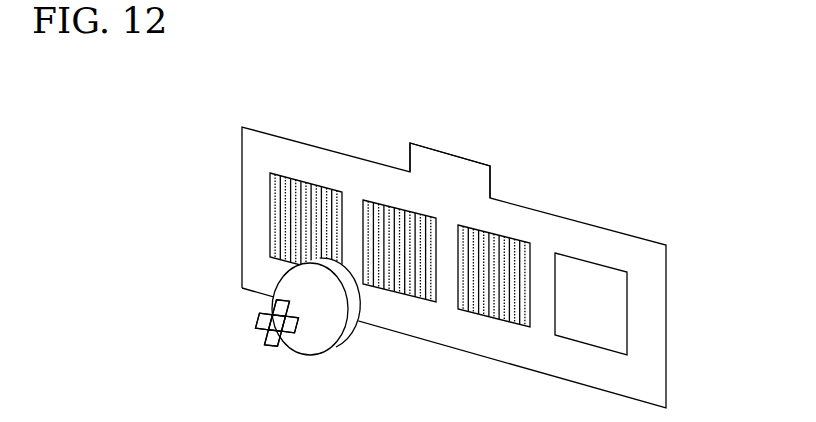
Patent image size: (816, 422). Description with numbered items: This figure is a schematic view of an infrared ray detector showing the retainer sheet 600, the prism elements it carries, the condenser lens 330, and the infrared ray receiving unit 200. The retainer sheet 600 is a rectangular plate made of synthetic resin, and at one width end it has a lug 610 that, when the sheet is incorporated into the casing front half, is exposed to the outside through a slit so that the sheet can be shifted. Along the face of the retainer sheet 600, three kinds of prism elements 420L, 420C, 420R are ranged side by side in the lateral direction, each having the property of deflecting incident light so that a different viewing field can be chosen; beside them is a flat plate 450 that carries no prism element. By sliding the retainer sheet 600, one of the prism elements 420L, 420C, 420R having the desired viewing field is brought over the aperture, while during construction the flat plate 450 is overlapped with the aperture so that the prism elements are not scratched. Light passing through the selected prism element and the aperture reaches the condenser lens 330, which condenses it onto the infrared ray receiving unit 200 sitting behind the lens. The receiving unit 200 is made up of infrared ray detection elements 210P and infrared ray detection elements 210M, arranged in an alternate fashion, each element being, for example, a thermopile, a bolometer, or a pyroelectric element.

The retainer sheet 600 is at (658, 250).
The lug 610 is at (449, 172).
The prism element 420L is at (323, 182).
The prism element 420C is at (400, 213).
The prism element 420R is at (488, 240).
The flat plate 450 is at (565, 268).
The condenser lens 330 is at (323, 337).
The infrared ray receiving unit 200 is at (95, 231).
The infrared ray detection element 210P is at (278, 305).
The infrared ray detection element 210M is at (270, 313).